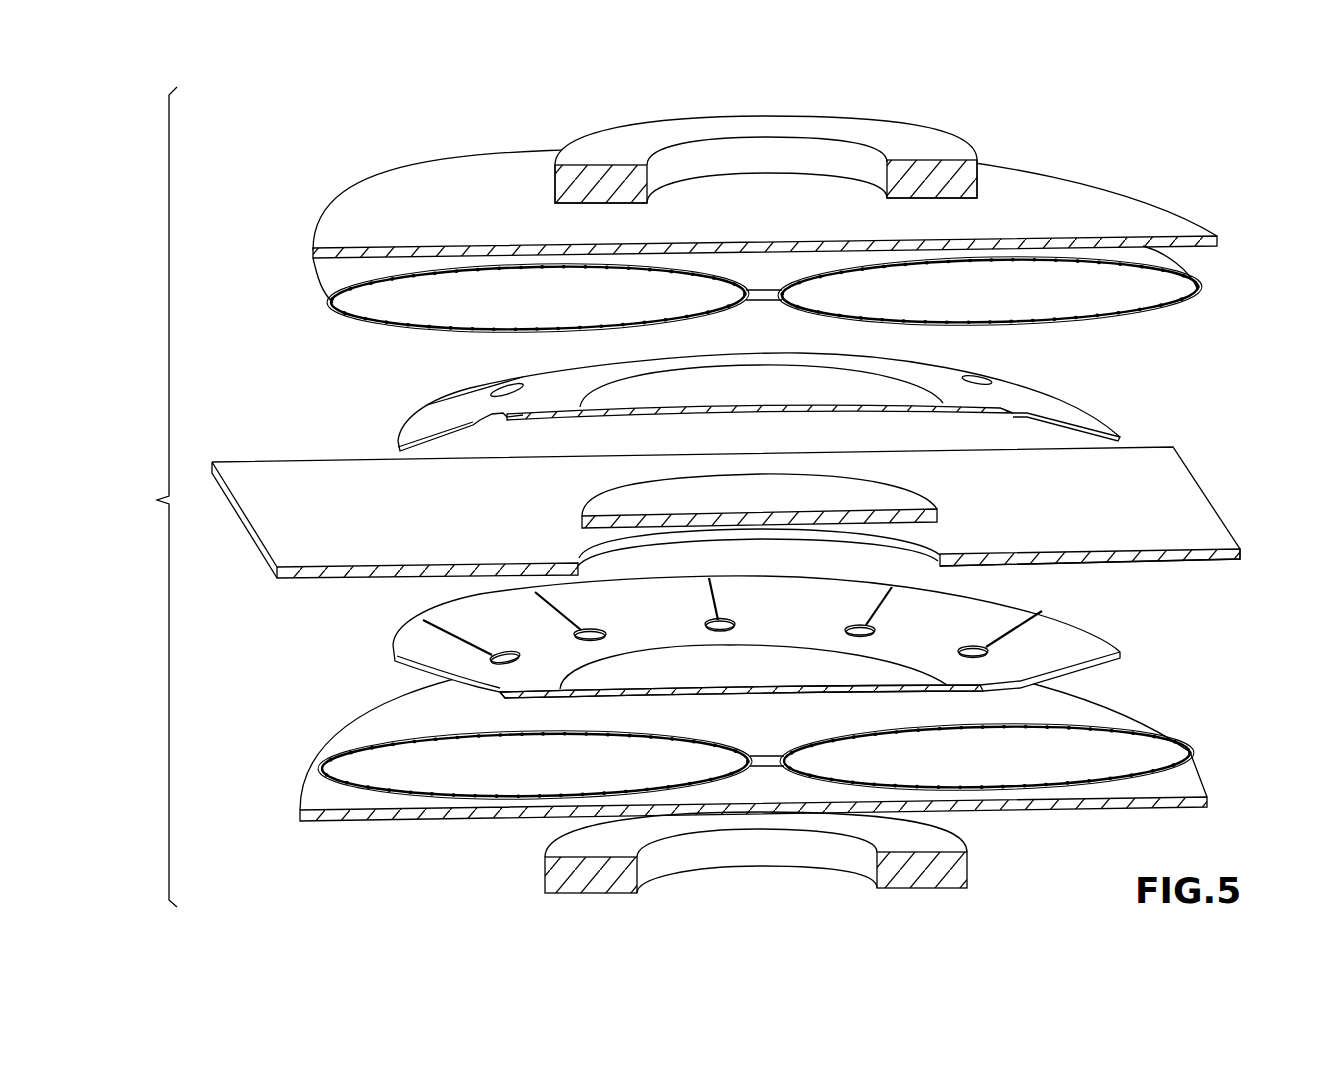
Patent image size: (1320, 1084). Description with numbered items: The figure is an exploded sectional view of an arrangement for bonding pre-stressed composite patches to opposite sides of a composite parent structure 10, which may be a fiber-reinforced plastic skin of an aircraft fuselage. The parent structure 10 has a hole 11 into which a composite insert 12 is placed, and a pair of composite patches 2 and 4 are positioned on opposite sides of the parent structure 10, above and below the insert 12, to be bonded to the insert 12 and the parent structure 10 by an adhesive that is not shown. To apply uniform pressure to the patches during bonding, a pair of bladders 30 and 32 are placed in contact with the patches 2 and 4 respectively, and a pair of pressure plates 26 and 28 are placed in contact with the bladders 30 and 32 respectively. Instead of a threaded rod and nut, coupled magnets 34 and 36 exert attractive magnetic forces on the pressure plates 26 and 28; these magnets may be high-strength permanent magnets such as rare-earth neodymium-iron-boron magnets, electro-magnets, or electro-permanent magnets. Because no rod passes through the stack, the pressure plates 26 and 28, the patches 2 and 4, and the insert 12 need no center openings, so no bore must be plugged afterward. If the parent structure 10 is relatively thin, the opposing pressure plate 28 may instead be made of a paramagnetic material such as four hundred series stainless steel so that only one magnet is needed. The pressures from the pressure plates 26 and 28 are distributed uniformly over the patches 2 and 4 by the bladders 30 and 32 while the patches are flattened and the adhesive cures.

The composite patch 2 is at (412, 422).
The composite patch 4 is at (407, 643).
The composite parent structure 10 is at (1165, 472).
The hole 11 is at (593, 543).
The composite insert 12 is at (910, 500).
The pressure plate 26 is at (1100, 192).
The pressure plate 28 is at (1177, 790).
The bladder 30 is at (1155, 322).
The bladder 32 is at (1113, 713).
The magnet 34 is at (912, 145).
The magnet 36 is at (683, 850).